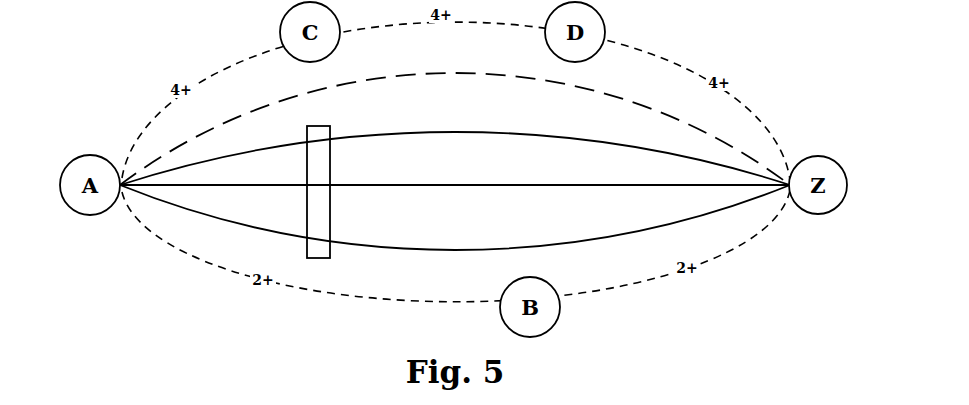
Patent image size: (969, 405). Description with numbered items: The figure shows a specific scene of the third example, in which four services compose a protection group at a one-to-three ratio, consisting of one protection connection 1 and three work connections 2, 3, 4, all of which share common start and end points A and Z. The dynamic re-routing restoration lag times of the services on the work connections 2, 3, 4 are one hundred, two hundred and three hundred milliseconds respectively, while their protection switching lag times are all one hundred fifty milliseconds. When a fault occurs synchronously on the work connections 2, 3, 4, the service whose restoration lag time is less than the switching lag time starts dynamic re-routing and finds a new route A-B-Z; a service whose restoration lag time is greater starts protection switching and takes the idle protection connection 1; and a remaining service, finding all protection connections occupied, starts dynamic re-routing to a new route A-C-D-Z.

The protection connection 1 is at (455, 124).
The work connection 2 is at (455, 154).
The work connection 3 is at (455, 186).
The work connection 4 is at (455, 222).